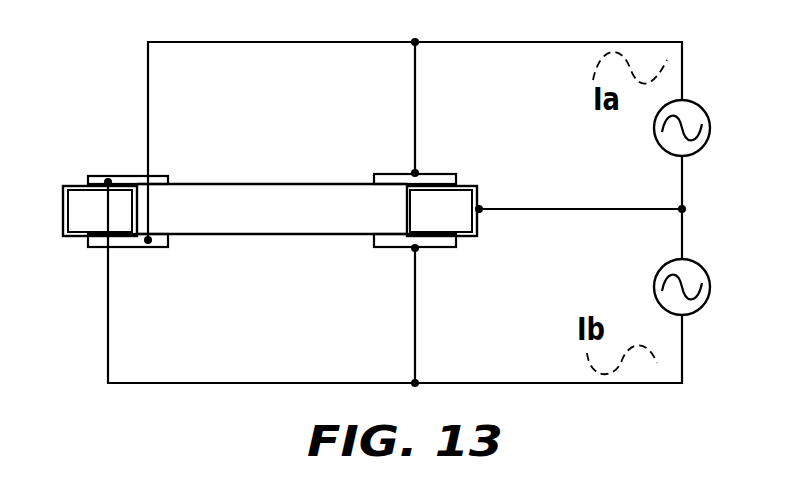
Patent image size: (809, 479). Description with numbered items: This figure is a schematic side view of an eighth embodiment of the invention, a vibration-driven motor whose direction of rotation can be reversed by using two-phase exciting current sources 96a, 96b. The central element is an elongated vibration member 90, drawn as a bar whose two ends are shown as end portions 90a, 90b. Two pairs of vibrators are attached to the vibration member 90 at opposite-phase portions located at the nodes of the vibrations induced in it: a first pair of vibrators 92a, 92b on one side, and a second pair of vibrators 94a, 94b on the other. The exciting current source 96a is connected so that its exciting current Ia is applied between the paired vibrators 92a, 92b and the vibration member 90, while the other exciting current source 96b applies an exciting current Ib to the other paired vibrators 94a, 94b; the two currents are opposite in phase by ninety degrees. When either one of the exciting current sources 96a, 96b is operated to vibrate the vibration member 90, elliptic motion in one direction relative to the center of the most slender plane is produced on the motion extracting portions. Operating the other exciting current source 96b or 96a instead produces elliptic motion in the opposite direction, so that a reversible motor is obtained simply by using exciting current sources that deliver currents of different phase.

The vibration member 90 is at (274, 200).
The left end mass / holder 90a is at (78, 212).
The right end mass / holder 90b is at (455, 208).
The vibrator 92a is at (163, 247).
The vibrator 92b is at (393, 180).
The vibrator 94a is at (162, 180).
The vibrator 94b is at (393, 248).
The exciting current source 96a is at (693, 115).
The exciting current source 96b is at (693, 307).